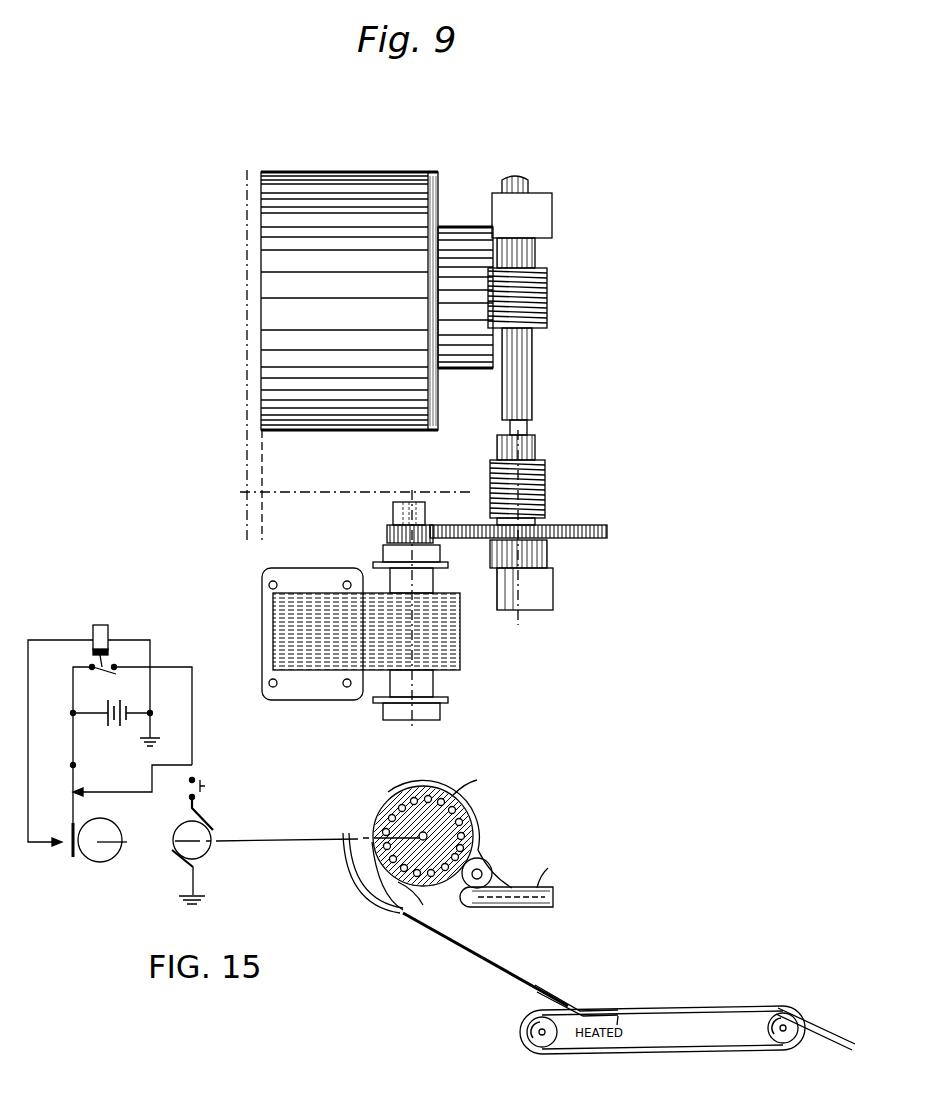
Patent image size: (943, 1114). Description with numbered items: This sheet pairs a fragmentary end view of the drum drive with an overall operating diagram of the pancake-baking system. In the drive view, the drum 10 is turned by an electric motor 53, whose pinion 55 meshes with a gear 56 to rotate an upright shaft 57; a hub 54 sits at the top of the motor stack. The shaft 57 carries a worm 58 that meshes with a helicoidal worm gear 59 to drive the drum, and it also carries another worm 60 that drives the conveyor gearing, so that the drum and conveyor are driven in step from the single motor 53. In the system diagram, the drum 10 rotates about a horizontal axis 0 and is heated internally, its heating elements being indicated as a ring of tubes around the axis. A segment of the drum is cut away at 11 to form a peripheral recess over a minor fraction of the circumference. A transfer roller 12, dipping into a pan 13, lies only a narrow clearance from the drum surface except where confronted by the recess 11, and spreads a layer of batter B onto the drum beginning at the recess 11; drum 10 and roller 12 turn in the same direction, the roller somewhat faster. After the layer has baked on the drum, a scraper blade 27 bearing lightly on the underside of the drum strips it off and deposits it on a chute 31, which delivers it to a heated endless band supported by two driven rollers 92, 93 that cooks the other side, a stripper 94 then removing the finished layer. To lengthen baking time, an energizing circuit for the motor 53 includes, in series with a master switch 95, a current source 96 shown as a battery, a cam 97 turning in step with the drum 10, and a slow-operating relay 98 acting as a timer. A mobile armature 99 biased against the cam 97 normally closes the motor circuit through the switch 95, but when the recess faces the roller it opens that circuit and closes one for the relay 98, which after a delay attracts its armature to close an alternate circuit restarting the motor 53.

In FIG. 9, the drum 10 is at (312, 177).
In FIG. 15, the drum 10 is at (378, 818).
In FIG. 9, the helicoidal worm gear 59 is at (515, 178).
In FIG. 9, the worm 58 is at (545, 285).
In FIG. 9, the upright shaft 57 is at (535, 430).
In FIG. 9, the worm 60 is at (545, 485).
In FIG. 9, the gear 56 is at (597, 540).
In FIG. 9, the motor shaft hub 54 is at (397, 500).
In FIG. 9, the pinion 55 is at (388, 535).
In FIG. 9, the electric motor 53 is at (328, 658).
In FIG. 15, the electric motor 53 is at (200, 847).
In FIG. 15, the slow-operating relay 98 is at (100, 624).
In FIG. 15, the current source 96 is at (113, 723).
In FIG. 15, the master switch 95 is at (202, 777).
In FIG. 15, the mobile armature 99 is at (75, 810).
In FIG. 15, the cam 97 is at (97, 853).
In FIG. 15, the peripheral recess 11 is at (405, 802).
In FIG. 15, the horizontal axis 0 is at (423, 830).
In FIG. 15, the transfer roller 12 is at (487, 863).
In FIG. 15, the pan 13 is at (517, 907).
In FIG. 15, the batter B is at (550, 892).
In FIG. 15, the chute 31 is at (352, 875).
In FIG. 15, the scraper blade 27 is at (422, 902).
In FIG. 15, the driven roller 92 is at (530, 1035).
In FIG. 15, the driven roller 93 is at (770, 1030).
In FIG. 15, the stripper 94 is at (825, 1038).